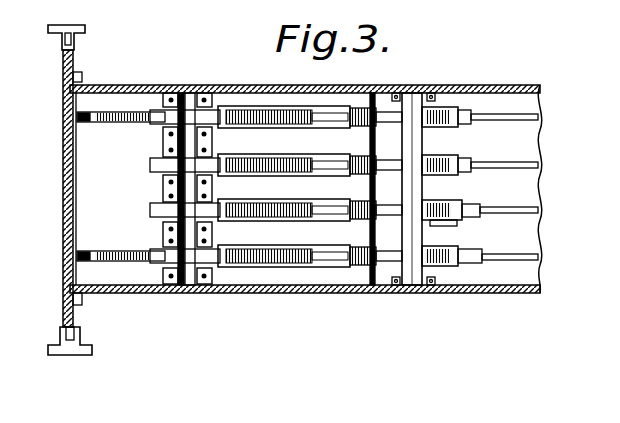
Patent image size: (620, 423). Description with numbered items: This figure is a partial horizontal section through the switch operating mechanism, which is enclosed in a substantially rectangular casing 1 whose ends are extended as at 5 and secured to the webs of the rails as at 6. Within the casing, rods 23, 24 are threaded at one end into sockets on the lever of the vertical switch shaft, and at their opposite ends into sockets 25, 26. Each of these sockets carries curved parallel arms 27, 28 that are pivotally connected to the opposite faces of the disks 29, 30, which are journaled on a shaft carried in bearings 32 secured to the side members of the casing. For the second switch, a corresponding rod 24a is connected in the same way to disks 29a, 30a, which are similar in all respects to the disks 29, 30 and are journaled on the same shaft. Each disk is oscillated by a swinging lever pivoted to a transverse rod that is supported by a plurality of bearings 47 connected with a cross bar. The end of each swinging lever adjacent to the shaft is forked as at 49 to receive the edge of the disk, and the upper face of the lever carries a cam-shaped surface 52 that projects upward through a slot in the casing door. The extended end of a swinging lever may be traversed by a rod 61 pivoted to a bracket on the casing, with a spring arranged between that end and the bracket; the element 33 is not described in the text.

The casing 1 is at (131, 86).
The extended ends of the casing 5 is at (63, 64).
The securing points on rail webs 6 is at (86, 31).
The rod 23 is at (523, 207).
The rod 24 is at (452, 199).
The rod 24a is at (533, 162).
The socket 25 is at (476, 204).
The socket 26 is at (477, 264).
The curved parallel arms 27 is at (462, 222).
The curved parallel arms 28 is at (460, 267).
The disk 29 is at (533, 114).
The disk 29a is at (453, 107).
The disk 30 is at (399, 286).
The disk 30a is at (453, 155).
The bearings 32 is at (412, 286).
The screw 33 is at (431, 92).
The bearings 47 is at (190, 86).
The forked end 49 is at (398, 88).
The cam-shaped surface 52 is at (309, 128).
The rod 61 is at (88, 123).